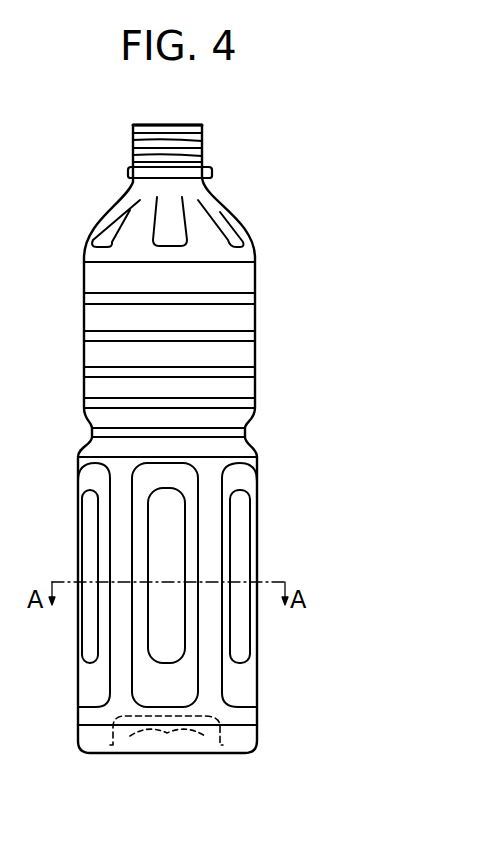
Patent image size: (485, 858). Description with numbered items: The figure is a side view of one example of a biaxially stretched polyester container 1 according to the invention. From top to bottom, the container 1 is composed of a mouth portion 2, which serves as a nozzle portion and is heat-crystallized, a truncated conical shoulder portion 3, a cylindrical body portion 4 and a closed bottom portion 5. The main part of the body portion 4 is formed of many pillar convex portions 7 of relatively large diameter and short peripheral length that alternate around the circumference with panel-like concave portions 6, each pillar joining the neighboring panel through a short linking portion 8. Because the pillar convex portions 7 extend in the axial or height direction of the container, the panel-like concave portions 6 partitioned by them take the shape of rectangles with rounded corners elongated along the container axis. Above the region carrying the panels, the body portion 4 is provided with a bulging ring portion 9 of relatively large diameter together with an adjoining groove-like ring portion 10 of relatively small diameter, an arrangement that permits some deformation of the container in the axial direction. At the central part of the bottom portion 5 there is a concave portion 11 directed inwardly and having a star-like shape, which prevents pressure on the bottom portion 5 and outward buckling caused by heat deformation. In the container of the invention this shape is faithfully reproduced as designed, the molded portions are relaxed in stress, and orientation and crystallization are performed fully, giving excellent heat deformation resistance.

The biaxially stretched polyester container 1 is at (268, 326).
The mouth portion 2 is at (203, 158).
The truncated conical shoulder portion 3 is at (203, 230).
The cylindrical body portion 4 is at (80, 462).
The closed bottom portion 5 is at (98, 753).
The panel-like concave portions 6 is at (238, 623).
The pillar convex portions 7 is at (207, 558).
The linking portion 8 is at (138, 605).
The bulging ring portion 9 is at (238, 315).
The groove-like ring portion 10 is at (112, 330).
The concave portion 11 is at (210, 757).